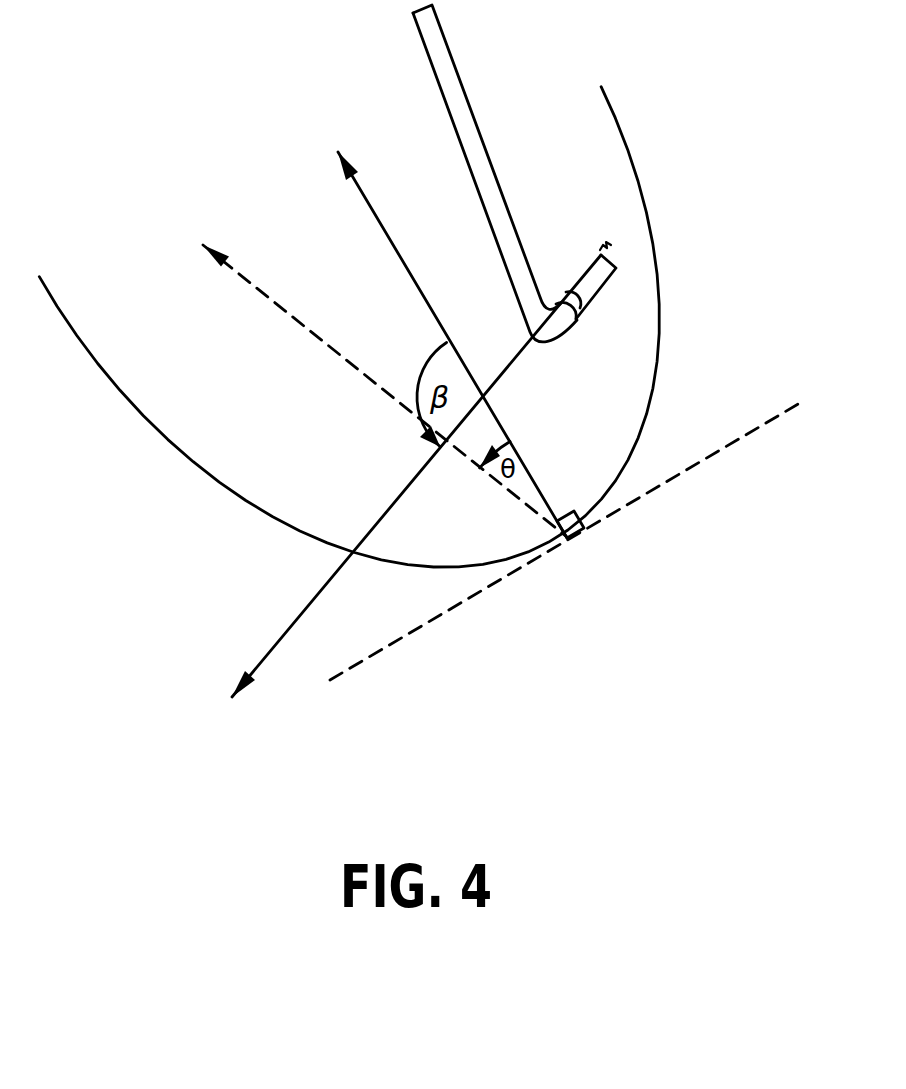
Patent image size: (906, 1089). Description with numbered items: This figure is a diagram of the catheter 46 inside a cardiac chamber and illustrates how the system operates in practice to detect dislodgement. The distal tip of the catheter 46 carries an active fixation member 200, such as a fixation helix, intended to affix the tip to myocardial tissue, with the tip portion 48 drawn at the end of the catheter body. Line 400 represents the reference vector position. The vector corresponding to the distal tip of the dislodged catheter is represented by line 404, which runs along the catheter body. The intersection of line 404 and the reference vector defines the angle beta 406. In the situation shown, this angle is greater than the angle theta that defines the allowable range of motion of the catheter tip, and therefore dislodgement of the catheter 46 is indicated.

The catheter 46 is at (458, 138).
The head 48 is at (577, 320).
The active fixation member 200 is at (607, 248).
The reference vector position line 400 is at (375, 217).
The dislodged catheter tip vector line 404 is at (303, 615).
The angle β 406 is at (420, 421).